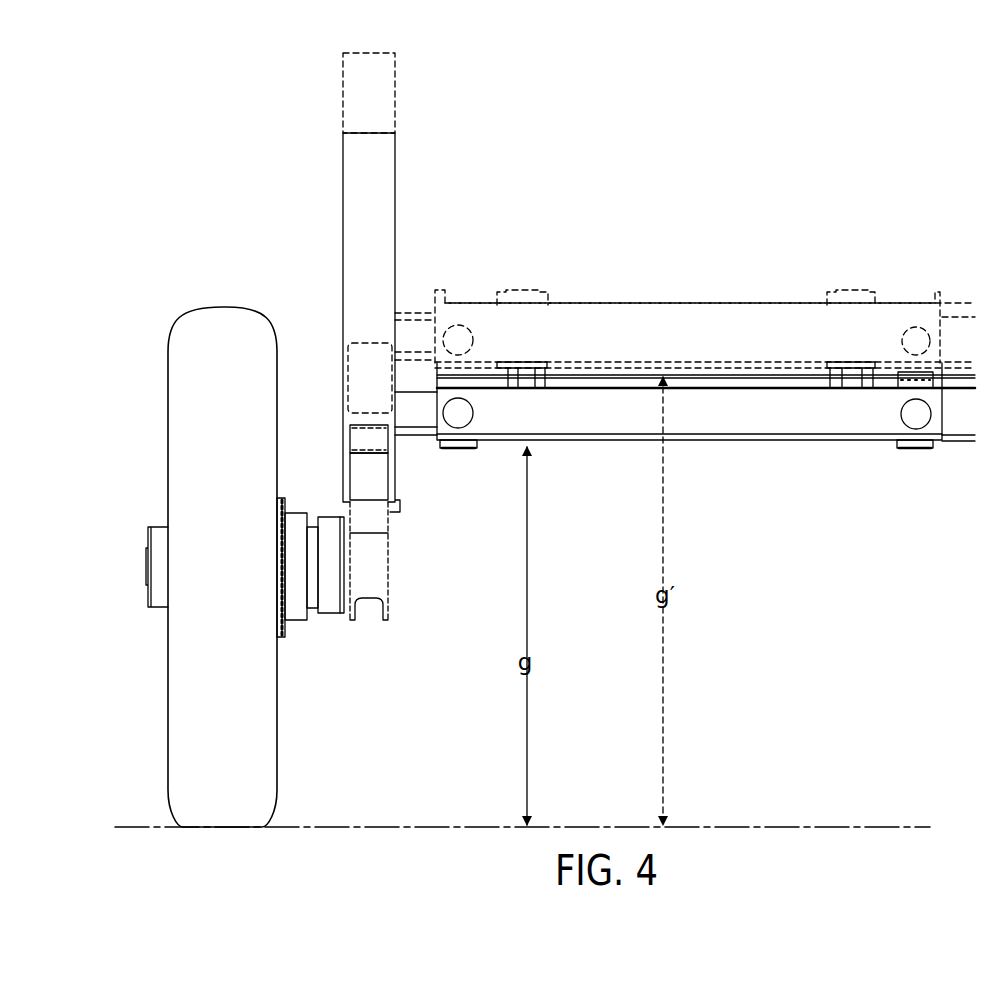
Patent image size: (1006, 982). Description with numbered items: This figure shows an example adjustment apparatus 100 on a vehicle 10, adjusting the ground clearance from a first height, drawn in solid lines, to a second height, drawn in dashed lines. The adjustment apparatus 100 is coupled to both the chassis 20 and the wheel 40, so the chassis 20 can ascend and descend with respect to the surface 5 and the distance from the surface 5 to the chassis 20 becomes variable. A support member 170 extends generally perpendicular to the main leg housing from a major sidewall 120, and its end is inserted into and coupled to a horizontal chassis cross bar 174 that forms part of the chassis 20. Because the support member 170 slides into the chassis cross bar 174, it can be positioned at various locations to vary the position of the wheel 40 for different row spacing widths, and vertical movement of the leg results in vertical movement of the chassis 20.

The surface 5 is at (772, 827).
The vehicle 10 is at (877, 180).
The chassis 20 is at (660, 305).
The wheel 40 is at (188, 527).
The adjustment apparatus 100 is at (348, 103).
The major sidewall 120 is at (307, 610).
The support member 170 is at (415, 428).
The chassis cross bar 174 is at (512, 427).